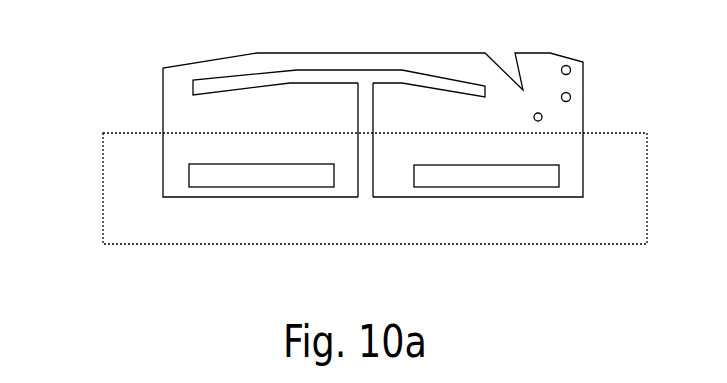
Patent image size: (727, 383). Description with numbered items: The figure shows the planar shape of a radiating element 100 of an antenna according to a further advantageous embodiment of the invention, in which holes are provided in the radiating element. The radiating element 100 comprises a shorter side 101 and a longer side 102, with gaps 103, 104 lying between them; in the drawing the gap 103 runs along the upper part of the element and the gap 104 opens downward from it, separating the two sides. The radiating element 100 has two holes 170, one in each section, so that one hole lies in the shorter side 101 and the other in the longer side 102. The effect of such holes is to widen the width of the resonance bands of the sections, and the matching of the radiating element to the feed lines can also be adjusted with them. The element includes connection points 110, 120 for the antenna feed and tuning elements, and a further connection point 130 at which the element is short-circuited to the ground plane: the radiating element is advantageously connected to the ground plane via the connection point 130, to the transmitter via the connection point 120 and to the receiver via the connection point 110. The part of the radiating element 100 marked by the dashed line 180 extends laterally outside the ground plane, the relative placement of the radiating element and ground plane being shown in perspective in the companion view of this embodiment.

The radiating element 100 is at (137, 49).
The shorter side 101 is at (568, 155).
The longer side 102 is at (225, 120).
The gap 103 is at (322, 72).
The gap 104 is at (365, 98).
The connection point 110 is at (534, 117).
The connection point 120 is at (571, 98).
The connection point 130 is at (571, 71).
The holes 170 is at (258, 177).
The dashed line 180 is at (505, 245).